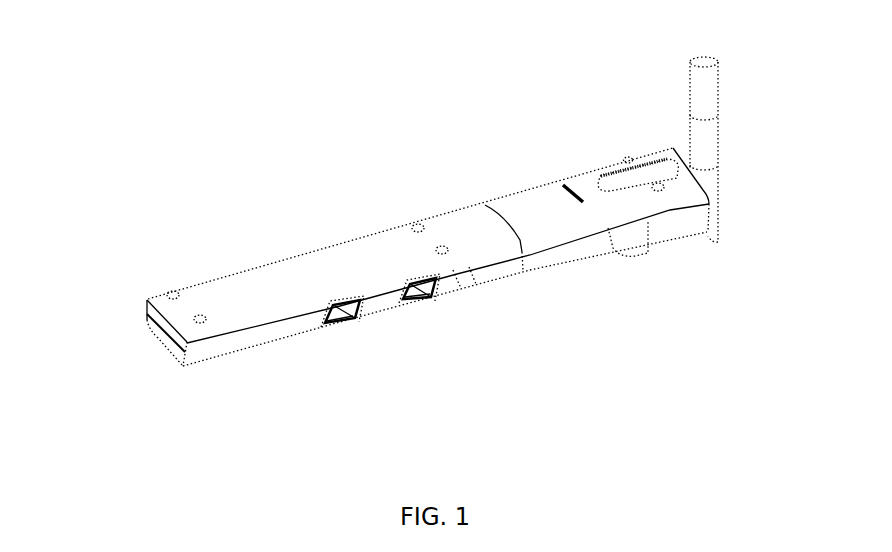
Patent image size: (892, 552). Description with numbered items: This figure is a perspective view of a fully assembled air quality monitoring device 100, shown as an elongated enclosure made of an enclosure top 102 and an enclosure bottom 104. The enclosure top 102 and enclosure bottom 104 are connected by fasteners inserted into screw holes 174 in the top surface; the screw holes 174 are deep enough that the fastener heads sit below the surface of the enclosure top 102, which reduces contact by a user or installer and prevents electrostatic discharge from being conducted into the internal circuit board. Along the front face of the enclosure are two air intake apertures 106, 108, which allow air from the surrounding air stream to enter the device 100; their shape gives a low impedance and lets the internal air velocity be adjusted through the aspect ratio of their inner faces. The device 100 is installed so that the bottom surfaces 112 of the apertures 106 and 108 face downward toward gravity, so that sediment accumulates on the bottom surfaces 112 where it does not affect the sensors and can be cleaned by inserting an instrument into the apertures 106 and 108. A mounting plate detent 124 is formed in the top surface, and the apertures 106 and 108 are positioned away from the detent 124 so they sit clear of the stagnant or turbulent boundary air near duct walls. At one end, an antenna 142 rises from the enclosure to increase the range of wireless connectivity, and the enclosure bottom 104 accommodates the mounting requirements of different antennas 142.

The device 100 is at (148, 338).
The enclosure top 102 is at (235, 288).
The enclosure bottom 104 is at (230, 352).
The air intake aperture 106 is at (340, 327).
The air intake aperture 108 is at (418, 305).
The bottom surfaces of the air apertures 112 is at (358, 320).
The mounting plate detent 124 is at (560, 183).
The antenna 142 is at (710, 137).
The screw holes 174 is at (157, 285).